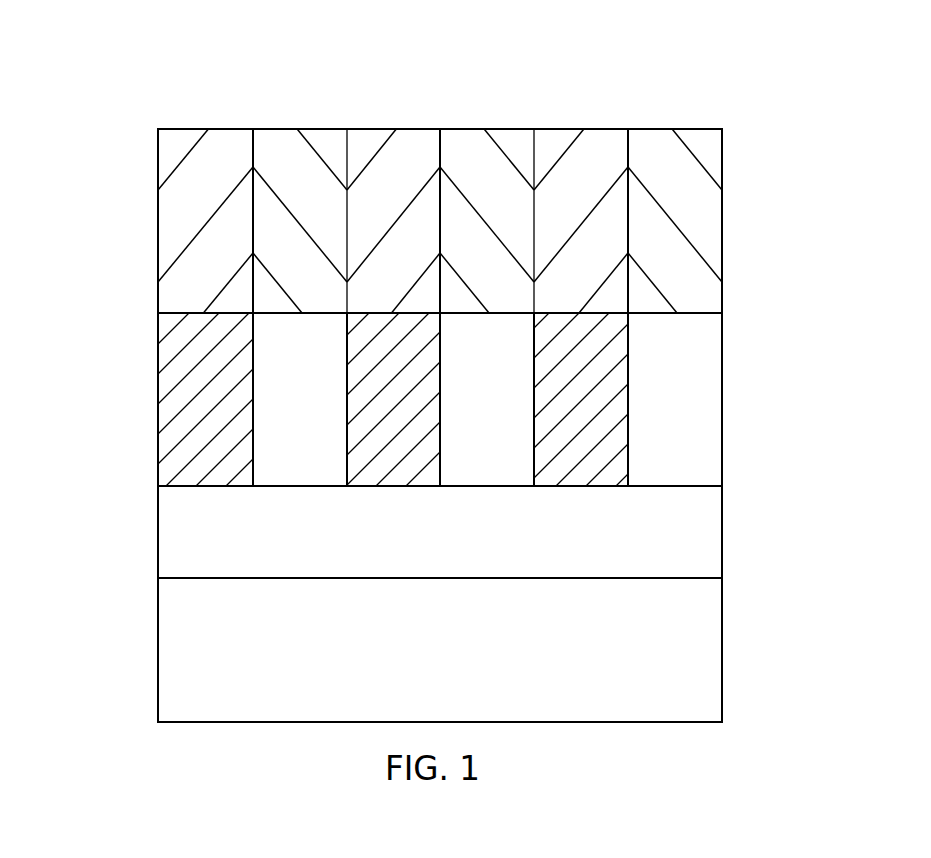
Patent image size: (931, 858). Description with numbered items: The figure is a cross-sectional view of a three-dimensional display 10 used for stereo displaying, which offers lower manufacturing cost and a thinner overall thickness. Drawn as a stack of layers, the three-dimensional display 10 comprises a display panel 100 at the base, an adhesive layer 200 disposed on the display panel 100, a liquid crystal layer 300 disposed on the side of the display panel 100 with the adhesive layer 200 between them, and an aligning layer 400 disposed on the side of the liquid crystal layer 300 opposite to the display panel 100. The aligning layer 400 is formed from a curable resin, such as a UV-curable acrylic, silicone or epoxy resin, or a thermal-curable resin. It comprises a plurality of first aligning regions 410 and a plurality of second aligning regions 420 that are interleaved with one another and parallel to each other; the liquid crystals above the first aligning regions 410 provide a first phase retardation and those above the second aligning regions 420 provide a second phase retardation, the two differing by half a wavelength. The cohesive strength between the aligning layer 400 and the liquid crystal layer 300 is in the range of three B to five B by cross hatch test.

The three-dimensional display 10 is at (157, 88).
The display panel 100 is at (723, 652).
The adhesive layer 200 is at (723, 529).
The liquid crystal layer 300 is at (723, 401).
The aligning layer 400 is at (723, 226).
The first aligning regions 410 is at (173, 230).
The second aligning regions 420 is at (268, 242).